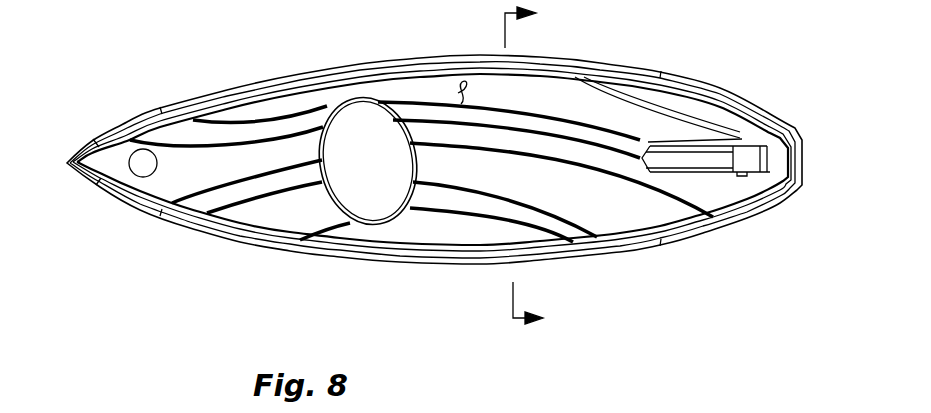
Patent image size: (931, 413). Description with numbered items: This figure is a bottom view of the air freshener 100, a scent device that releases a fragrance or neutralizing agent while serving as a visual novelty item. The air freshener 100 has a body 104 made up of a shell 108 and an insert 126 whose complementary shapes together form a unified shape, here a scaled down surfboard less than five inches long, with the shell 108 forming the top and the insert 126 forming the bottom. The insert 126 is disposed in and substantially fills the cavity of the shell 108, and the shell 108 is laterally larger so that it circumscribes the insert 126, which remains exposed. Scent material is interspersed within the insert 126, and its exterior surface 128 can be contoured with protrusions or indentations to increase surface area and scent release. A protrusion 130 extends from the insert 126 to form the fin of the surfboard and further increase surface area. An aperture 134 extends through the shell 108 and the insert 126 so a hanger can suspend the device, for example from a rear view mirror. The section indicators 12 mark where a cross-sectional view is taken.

The air freshener 100 is at (667, 267).
The body 104 is at (747, 235).
The shell 108 is at (373, 262).
The insert 126 is at (620, 98).
The exterior surface 128 is at (458, 93).
The protrusion 130 is at (745, 158).
The aperture 134 is at (150, 150).
The section line 12 is at (542, 170).